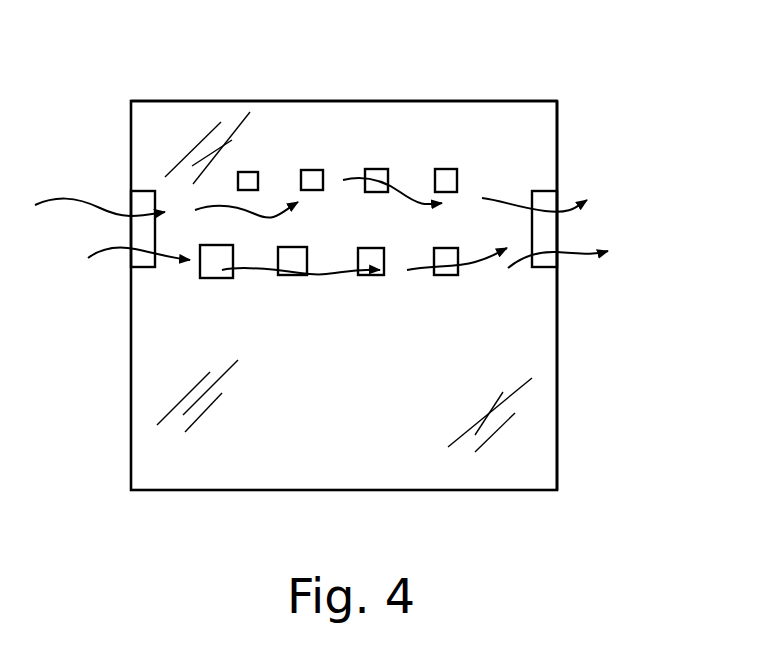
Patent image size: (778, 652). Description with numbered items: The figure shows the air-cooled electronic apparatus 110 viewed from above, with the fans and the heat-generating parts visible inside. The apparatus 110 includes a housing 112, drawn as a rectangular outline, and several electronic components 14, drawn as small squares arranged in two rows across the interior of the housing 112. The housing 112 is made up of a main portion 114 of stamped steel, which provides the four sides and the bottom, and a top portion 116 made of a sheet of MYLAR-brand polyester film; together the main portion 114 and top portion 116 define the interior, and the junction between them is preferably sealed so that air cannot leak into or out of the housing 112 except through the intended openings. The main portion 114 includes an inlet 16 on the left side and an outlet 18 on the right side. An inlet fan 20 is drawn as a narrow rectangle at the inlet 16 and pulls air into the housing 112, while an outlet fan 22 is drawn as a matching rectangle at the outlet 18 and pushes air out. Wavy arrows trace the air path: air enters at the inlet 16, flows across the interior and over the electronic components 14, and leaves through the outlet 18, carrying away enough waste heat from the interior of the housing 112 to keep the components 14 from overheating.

The electronic components 14 is at (316, 170).
The inlet 16 is at (123, 258).
The outlet 18 is at (567, 228).
The inlet fan 20 is at (147, 170).
The outlet fan 22 is at (545, 182).
The air-cooled electronic apparatus 110 is at (638, 98).
The housing 112 is at (470, 82).
The main portion 114 is at (557, 463).
The top portion 116 is at (542, 387).